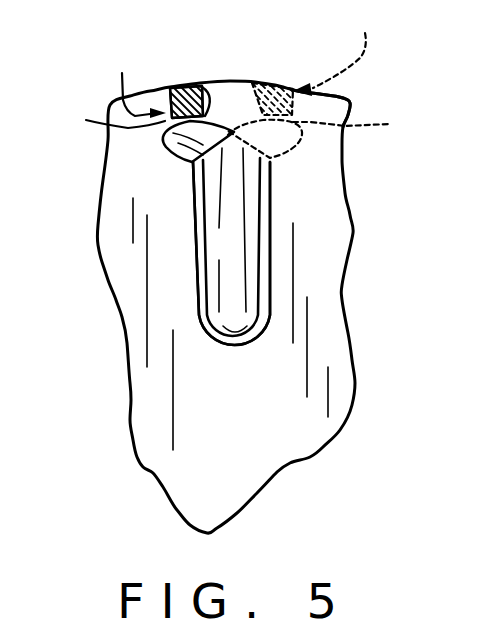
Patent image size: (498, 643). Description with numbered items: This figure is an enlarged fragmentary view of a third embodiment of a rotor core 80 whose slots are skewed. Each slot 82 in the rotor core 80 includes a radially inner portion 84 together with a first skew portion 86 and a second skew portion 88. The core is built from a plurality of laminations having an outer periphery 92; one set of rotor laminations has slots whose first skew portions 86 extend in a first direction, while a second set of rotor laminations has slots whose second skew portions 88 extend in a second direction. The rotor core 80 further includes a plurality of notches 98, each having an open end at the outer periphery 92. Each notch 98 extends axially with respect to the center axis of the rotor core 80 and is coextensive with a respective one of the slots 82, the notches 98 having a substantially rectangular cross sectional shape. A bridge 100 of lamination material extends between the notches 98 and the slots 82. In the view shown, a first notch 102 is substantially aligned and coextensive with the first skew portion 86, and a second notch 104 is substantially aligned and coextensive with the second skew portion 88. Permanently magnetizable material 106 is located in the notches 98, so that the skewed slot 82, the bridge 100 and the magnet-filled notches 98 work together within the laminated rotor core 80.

The rotor core 80 is at (327, 258).
The slot 82 is at (198, 293).
The radially inner portion 84 is at (248, 255).
The first skew portion 86 is at (165, 140).
The second skew portion 88 is at (270, 158).
The outer periphery 92 is at (348, 98).
The notch 98 is at (245, 65).
The bridge 100 is at (239, 122).
The first notch 102 is at (206, 98).
The second notch 104 is at (253, 86).
The permanently magnetizable material 106 is at (172, 87).